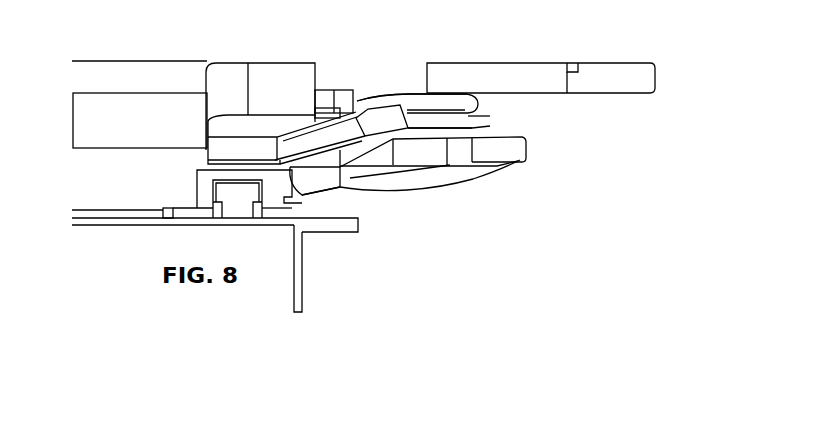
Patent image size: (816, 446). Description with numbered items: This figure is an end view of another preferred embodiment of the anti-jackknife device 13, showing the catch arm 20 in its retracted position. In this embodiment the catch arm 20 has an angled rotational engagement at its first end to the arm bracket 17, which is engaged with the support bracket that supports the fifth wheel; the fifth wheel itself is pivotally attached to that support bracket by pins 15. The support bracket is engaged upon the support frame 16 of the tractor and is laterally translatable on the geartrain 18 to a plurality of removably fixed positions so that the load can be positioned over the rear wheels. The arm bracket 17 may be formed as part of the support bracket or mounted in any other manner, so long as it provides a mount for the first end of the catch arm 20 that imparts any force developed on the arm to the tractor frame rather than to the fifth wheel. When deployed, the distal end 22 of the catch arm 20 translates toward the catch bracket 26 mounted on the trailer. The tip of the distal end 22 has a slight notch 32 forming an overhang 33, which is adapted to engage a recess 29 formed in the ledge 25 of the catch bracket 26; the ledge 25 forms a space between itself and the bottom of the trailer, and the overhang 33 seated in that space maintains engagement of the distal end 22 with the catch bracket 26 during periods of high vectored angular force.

The device 13 is at (477, 250).
The pins 15 is at (273, 202).
The support frame 16 is at (320, 228).
The arm bracket 17 is at (218, 149).
The geartrain 18 is at (200, 213).
The catch arms 20 is at (432, 177).
The distal end 22 is at (478, 100).
The ledges 25 is at (565, 93).
The catch brackets 26 is at (487, 77).
The recess 29 is at (572, 65).
The notch 32 is at (475, 120).
The overhang 33 is at (410, 102).